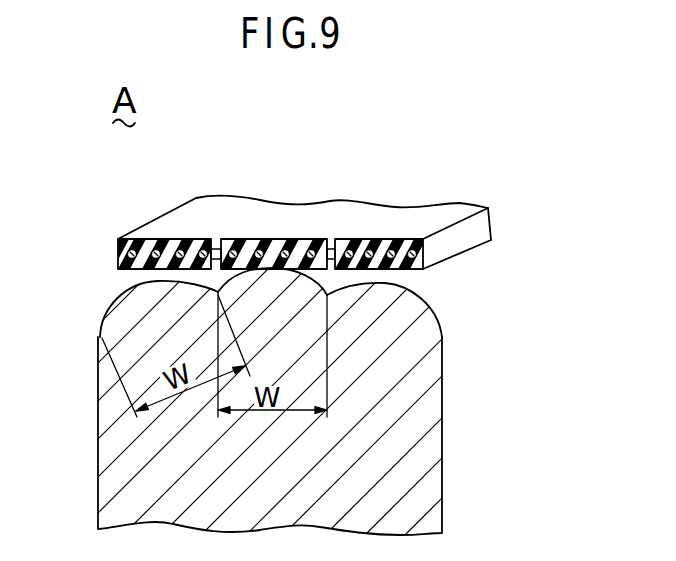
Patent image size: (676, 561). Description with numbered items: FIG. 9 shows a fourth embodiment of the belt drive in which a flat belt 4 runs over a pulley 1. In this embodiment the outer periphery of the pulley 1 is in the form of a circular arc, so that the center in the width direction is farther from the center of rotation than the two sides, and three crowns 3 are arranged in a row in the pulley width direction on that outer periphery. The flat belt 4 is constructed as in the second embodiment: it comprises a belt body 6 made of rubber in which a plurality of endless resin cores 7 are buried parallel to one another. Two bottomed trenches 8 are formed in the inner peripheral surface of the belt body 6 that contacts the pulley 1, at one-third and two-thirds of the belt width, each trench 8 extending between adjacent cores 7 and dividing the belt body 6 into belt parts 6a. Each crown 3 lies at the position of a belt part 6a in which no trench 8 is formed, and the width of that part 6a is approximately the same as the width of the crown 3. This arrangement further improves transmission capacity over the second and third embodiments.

The pulley 1 is at (95, 460).
The crown 3 is at (147, 290).
The flat belt 4 is at (423, 205).
The belt body 6 is at (266, 247).
The belt part 6a is at (175, 270).
The core 7 is at (188, 246).
The trench 8 is at (217, 251).